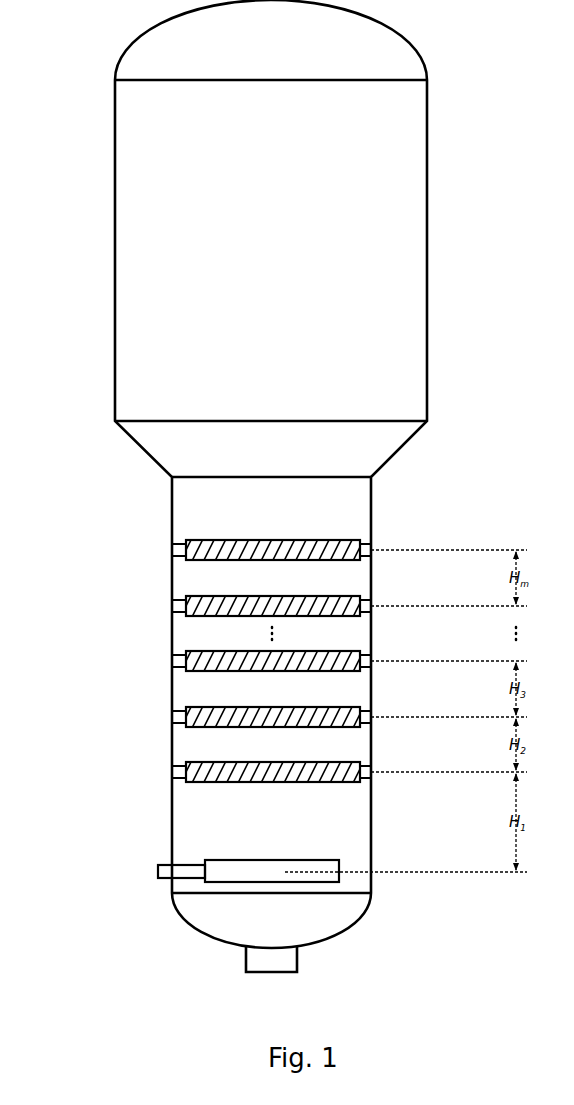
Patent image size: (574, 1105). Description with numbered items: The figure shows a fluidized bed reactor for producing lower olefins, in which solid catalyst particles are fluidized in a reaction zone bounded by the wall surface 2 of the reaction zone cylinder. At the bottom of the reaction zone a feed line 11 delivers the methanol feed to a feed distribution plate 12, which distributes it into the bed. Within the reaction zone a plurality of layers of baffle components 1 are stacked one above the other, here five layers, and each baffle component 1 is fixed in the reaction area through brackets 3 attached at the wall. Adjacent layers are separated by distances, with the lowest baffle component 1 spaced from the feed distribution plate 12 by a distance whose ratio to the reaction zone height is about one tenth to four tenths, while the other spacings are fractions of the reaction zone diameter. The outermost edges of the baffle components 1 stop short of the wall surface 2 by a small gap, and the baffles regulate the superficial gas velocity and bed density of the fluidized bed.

The baffle component 1 is at (205, 552).
The wall surface 2 is at (172, 585).
The bracket 3 is at (172, 662).
The feed line 11 is at (130, 872).
The feed distribution plate 12 is at (250, 873).